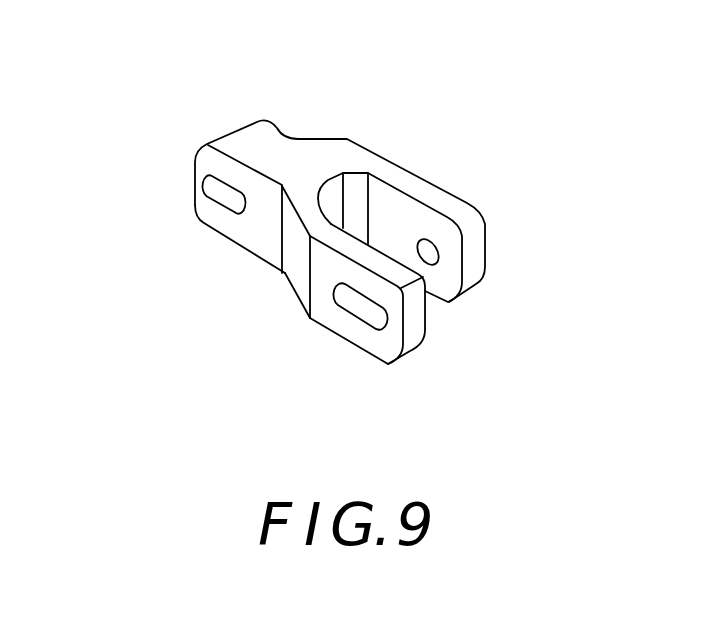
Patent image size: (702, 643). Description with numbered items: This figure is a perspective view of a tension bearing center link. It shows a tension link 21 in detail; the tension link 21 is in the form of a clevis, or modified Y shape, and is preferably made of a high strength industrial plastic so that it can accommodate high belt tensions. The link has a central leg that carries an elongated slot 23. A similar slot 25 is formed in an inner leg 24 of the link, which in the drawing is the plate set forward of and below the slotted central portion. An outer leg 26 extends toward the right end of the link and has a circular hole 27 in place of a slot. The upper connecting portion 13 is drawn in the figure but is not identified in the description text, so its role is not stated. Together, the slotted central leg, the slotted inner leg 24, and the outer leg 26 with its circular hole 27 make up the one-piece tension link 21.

The connecting body / top band of bracket 13 is at (270, 122).
The tension link 21 is at (400, 150).
The elongated slot 23 is at (210, 187).
The inner leg 24 is at (345, 343).
The slot 25 is at (340, 292).
The outer leg 26 is at (460, 201).
The circular hole 27 is at (439, 262).